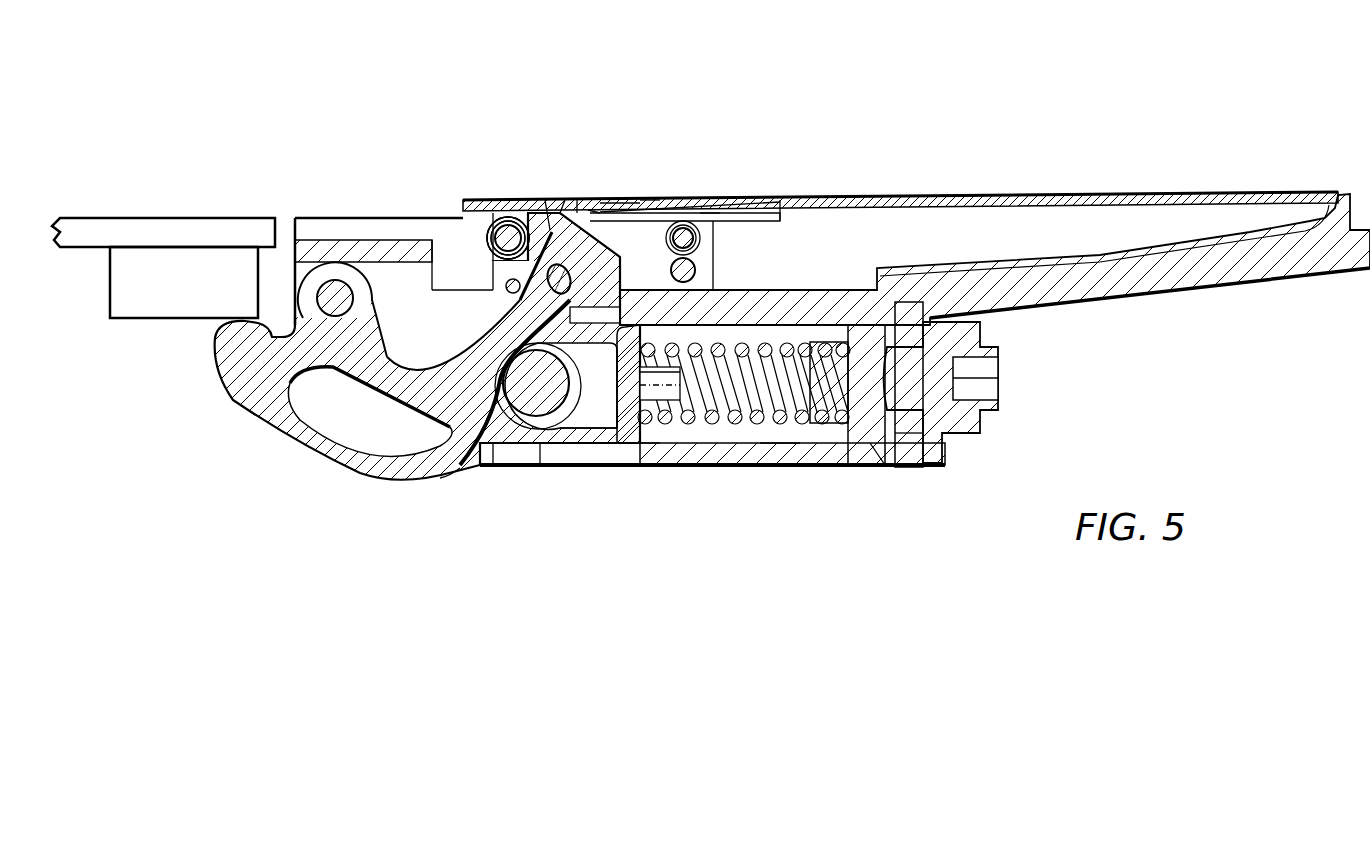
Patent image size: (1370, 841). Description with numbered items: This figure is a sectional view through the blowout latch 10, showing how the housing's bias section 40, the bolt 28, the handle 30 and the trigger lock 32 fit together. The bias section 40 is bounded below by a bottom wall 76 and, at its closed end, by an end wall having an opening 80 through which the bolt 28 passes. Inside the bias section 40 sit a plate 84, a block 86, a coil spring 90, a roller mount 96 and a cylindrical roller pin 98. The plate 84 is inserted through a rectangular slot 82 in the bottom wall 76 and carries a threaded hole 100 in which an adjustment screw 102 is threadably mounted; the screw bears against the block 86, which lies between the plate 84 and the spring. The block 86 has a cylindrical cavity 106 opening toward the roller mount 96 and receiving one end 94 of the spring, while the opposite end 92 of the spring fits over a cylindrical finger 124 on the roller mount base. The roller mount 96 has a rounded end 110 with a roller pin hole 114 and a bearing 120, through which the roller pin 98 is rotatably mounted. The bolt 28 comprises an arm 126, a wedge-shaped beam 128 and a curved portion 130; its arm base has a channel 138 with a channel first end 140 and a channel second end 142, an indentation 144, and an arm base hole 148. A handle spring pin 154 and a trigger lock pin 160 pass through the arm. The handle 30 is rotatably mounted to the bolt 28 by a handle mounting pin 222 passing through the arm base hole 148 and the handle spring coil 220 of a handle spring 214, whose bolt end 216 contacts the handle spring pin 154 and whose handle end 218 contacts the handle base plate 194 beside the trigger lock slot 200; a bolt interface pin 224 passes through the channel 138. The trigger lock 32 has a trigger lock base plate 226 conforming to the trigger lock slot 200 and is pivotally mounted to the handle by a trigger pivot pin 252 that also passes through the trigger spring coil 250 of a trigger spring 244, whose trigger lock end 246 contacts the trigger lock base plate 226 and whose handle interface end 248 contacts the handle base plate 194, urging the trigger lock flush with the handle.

The blowout latch 10 is at (1110, 115).
The bolt 28 is at (258, 383).
The handle 30 is at (1290, 200).
The trigger lock 32 is at (690, 200).
The bias section 40 is at (797, 473).
The bottom wall 76 is at (780, 457).
The opening 80 is at (647, 468).
The rectangular slot 82 is at (903, 477).
The plate 84 is at (917, 473).
The block 86 is at (875, 440).
The coil spring 90 is at (730, 415).
The spring end 92 is at (653, 460).
The spring end 94 is at (840, 450).
The roller mount 96 is at (593, 480).
The roller pin 98 is at (552, 390).
The threaded hole 100 is at (925, 314).
The adjustment screw 102 is at (1000, 350).
The cylindrical cavity 106 is at (827, 440).
The rounded end 110 is at (548, 470).
The roller pin hole 114 is at (517, 462).
The bearing 120 is at (567, 452).
The cylindrical finger 124 is at (670, 395).
The arm 126 is at (588, 210).
The wedge-shaped beam 128 is at (450, 478).
The curved portion 130 is at (364, 478).
The channel 138 is at (480, 348).
The channel first end 140 is at (485, 468).
The channel second end 142 is at (545, 200).
The indentation 144 is at (530, 202).
The arm base hole 148 is at (505, 200).
The handle spring pin 154 is at (505, 290).
The trigger lock pin 160 is at (695, 270).
The handle base plate 194 is at (565, 200).
The trigger lock slot 200 is at (650, 197).
The handle spring 214 is at (494, 215).
The bolt end 216 is at (490, 240).
The handle end 218 is at (577, 200).
The handle spring coil 220 is at (490, 237).
The handle mounting pin 222 is at (440, 205).
The bolt interface pin 224 is at (637, 450).
The trigger lock base plate 226 is at (708, 205).
The trigger spring 244 is at (760, 205).
The trigger lock end 246 is at (615, 205).
The handle interface end 248 is at (812, 212).
The trigger spring coil 250 is at (715, 236).
The trigger pivot pin 252 is at (692, 239).